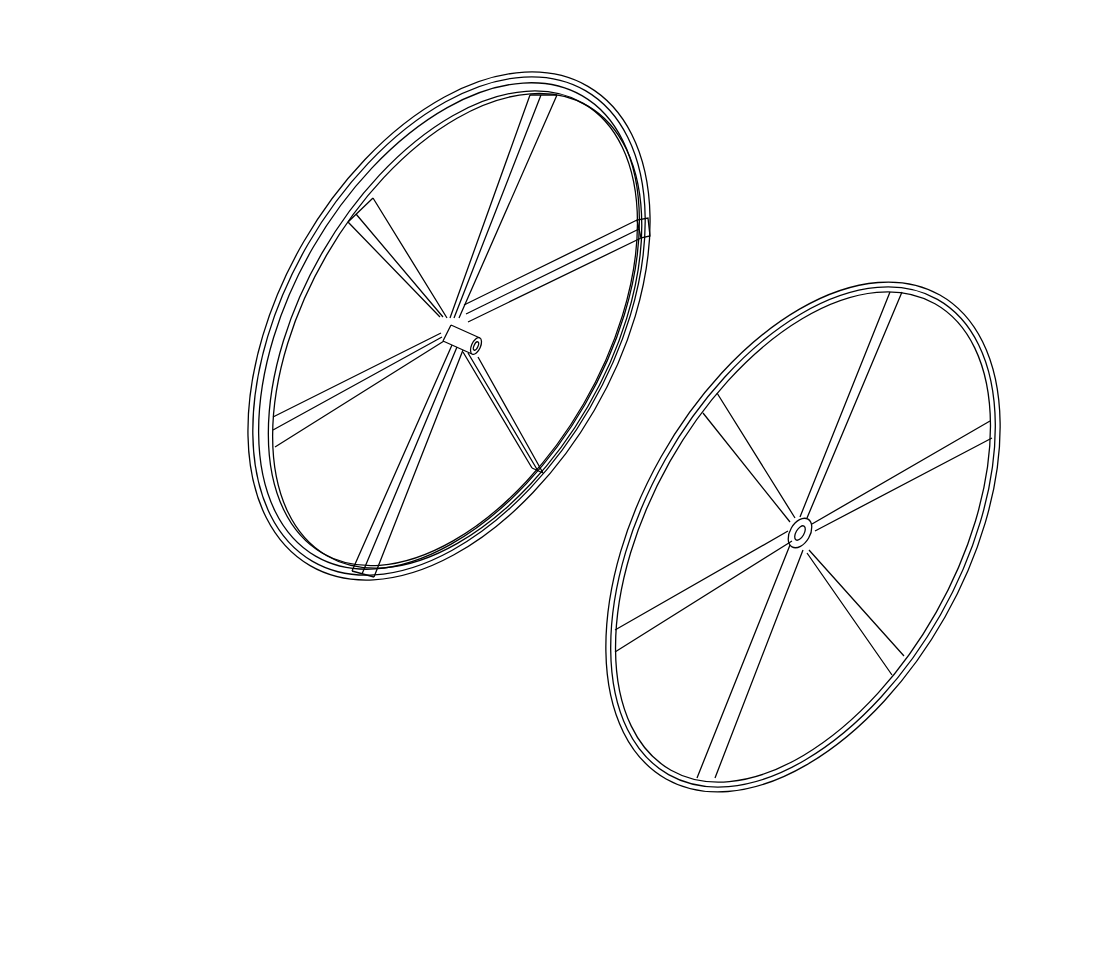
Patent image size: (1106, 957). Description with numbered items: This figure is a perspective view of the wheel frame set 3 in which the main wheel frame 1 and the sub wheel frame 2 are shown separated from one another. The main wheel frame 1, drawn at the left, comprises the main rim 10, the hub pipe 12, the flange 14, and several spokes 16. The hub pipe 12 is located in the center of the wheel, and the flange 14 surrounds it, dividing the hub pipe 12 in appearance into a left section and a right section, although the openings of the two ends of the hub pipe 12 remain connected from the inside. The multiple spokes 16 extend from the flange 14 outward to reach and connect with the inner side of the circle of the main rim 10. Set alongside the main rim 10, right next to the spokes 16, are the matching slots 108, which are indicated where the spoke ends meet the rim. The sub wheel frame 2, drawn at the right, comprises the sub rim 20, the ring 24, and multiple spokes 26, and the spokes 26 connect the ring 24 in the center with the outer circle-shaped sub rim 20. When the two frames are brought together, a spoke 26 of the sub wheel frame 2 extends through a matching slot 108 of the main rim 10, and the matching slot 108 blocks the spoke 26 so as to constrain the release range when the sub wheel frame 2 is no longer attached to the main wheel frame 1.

The wheel frame set 3 is at (188, 160).
The main wheel frame 1 is at (383, 143).
The main rim 10 is at (297, 262).
The hub pipe 12 is at (444, 331).
The flange 14 is at (460, 320).
The spokes 16 is at (578, 268).
The matching slot 108 is at (568, 466).
The sub wheel frame 2 is at (960, 585).
The sub rim 20 is at (997, 383).
The ring 24 is at (816, 532).
The spokes 26 is at (955, 440).